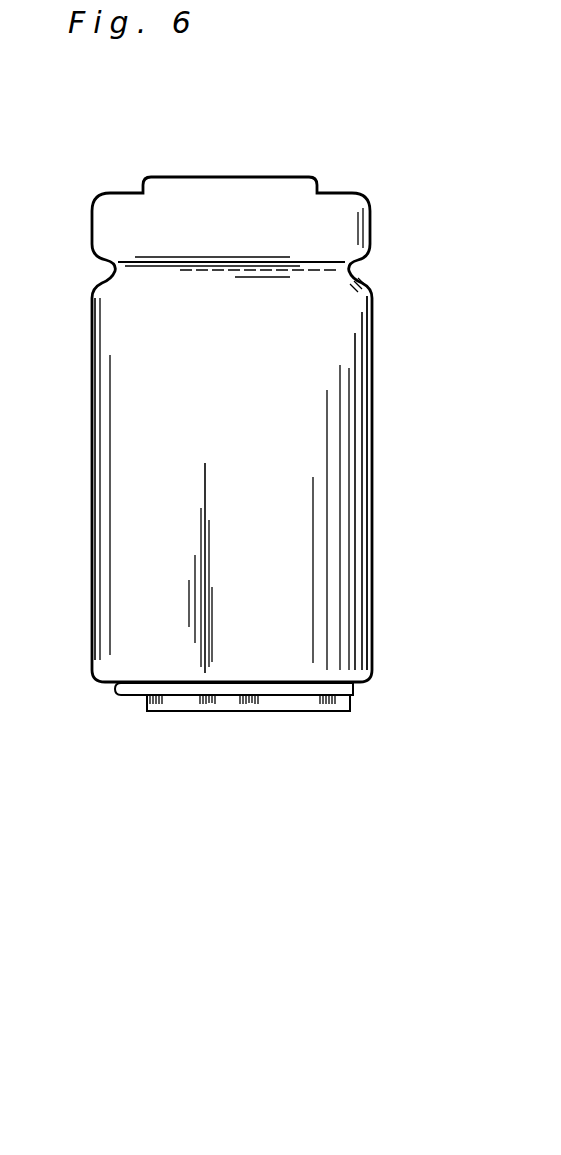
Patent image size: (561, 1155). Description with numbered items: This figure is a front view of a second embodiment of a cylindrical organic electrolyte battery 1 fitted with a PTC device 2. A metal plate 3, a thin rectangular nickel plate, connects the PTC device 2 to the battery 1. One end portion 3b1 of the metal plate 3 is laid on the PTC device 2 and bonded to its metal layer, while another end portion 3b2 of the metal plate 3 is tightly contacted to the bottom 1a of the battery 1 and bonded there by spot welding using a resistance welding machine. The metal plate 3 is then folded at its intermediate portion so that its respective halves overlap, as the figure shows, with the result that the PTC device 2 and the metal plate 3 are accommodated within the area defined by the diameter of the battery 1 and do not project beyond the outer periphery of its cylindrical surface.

The battery 1 is at (328, 444).
The bottom of the battery 1a is at (356, 686).
The PTC device 2 is at (240, 702).
The metal plate 3 is at (120, 697).
The one end portion of the metal plate 3b1 is at (278, 695).
The another end portion of the metal plate 3b2 is at (198, 684).